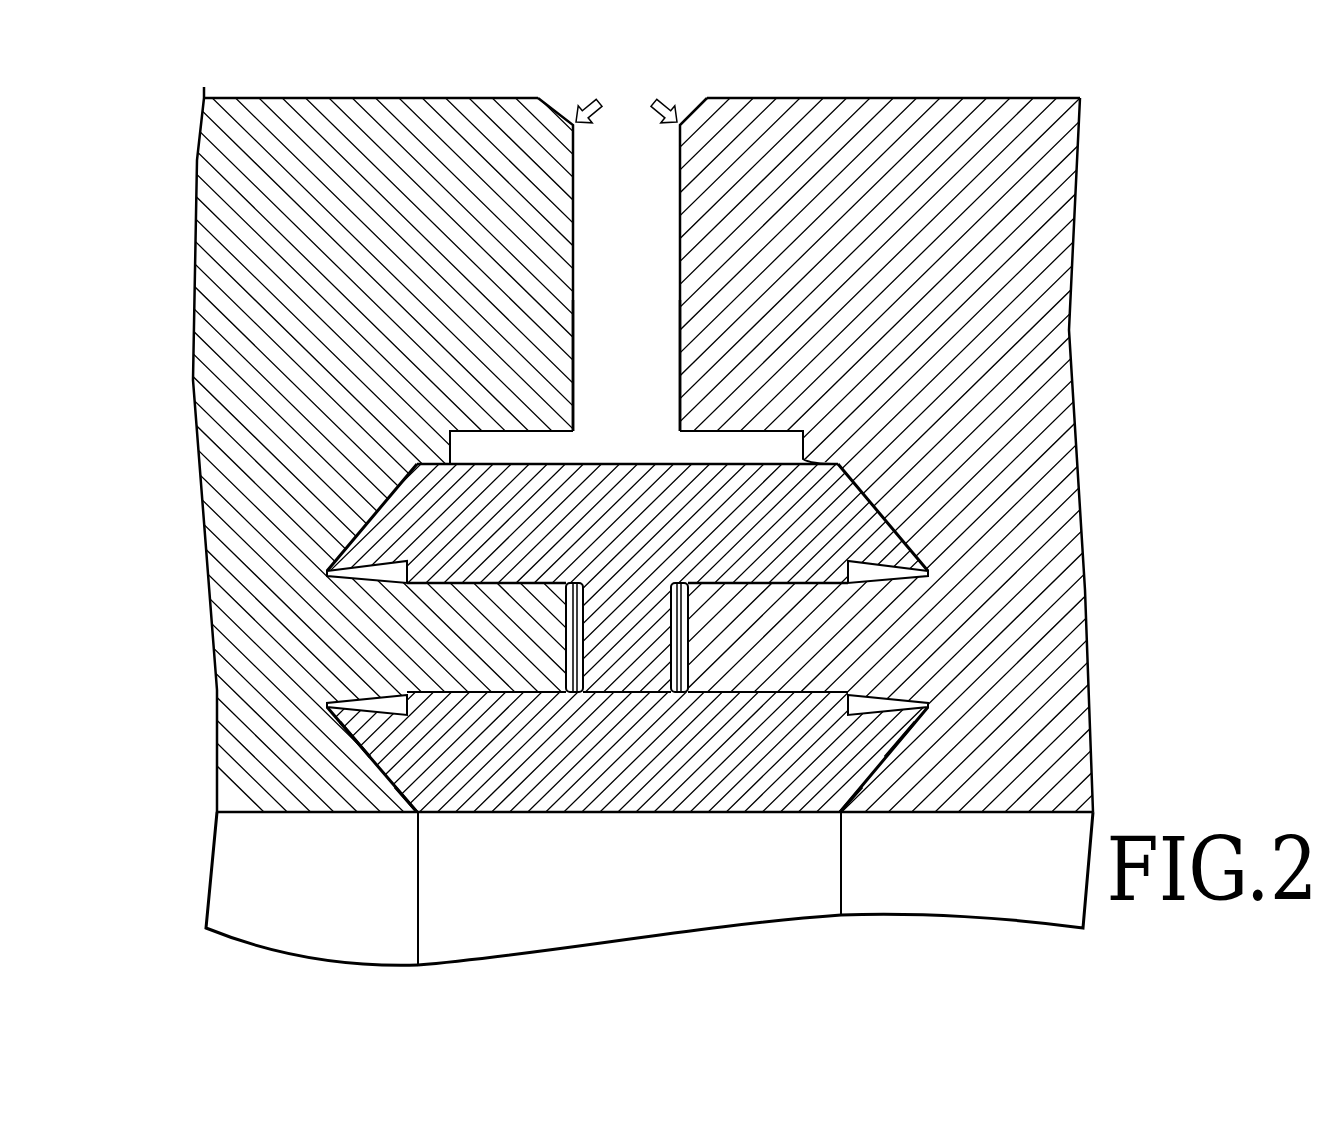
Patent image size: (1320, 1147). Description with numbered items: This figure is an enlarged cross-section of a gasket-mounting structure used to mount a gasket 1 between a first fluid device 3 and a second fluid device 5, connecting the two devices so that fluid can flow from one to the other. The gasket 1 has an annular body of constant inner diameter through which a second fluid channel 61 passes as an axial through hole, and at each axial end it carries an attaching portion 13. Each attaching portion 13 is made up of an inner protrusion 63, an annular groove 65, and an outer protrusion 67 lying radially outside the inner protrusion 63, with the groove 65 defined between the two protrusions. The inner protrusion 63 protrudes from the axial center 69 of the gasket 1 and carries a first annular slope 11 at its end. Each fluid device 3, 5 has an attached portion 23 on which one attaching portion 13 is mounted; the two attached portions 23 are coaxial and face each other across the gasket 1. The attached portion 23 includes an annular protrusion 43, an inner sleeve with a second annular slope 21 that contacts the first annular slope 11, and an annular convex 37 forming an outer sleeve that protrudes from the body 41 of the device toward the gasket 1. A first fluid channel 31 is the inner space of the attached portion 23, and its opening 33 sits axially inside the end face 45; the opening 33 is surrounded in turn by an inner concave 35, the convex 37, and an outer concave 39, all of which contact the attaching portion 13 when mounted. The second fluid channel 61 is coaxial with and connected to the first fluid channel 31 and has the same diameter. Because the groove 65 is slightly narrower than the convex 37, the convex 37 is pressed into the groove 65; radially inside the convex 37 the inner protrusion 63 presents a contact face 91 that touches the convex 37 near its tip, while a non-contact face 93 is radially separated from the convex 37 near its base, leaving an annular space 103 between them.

The gasket 1 is at (617, 584).
The first fluid device 3 is at (595, 99).
The second fluid device 5 is at (657, 99).
The first annular slope 11 is at (400, 712).
The attaching portion 13 is at (355, 530).
The second annular slope 21 is at (380, 752).
The attached portion 23 is at (678, 204).
The first fluid channel 31 is at (319, 934).
The opening 33 is at (419, 912).
The inner concave 35 is at (323, 705).
The convex 37 is at (483, 698).
The outer concave 39 is at (323, 573).
The body 41 is at (243, 795).
The protrusion 43 is at (403, 805).
The end face 45 is at (679, 321).
The second fluid channel 61 is at (596, 931).
The inner protrusion 63 is at (474, 816).
The groove 65 is at (571, 697).
The outer protrusion 67 is at (477, 460).
The axial center 69 is at (632, 680).
The contact face 91 is at (530, 692).
The non-contact face 93 is at (418, 705).
The annular space 103 is at (375, 703).